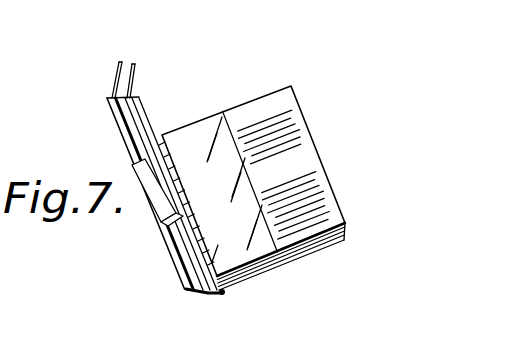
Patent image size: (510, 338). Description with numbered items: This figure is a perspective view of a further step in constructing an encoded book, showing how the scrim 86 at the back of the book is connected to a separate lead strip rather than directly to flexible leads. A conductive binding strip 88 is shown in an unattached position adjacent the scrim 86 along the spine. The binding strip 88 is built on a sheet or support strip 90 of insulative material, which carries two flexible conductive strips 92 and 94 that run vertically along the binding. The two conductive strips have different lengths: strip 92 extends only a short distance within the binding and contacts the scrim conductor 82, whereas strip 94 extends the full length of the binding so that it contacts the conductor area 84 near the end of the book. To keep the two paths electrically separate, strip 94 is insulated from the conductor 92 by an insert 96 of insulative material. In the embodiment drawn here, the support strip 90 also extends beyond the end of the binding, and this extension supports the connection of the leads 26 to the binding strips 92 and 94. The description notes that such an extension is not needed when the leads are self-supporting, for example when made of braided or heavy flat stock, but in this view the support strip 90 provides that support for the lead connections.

The leads 26 is at (108, 79).
The scrim conductor 82 is at (159, 140).
The conductor area 84 is at (224, 294).
The scrim 86 is at (247, 247).
The conductive binding strip 88 is at (170, 267).
The support strip 90 is at (204, 281).
The flexible conductive strip 92 is at (137, 97).
The flexible conductive strip 94 is at (121, 128).
The insert 96 is at (155, 200).